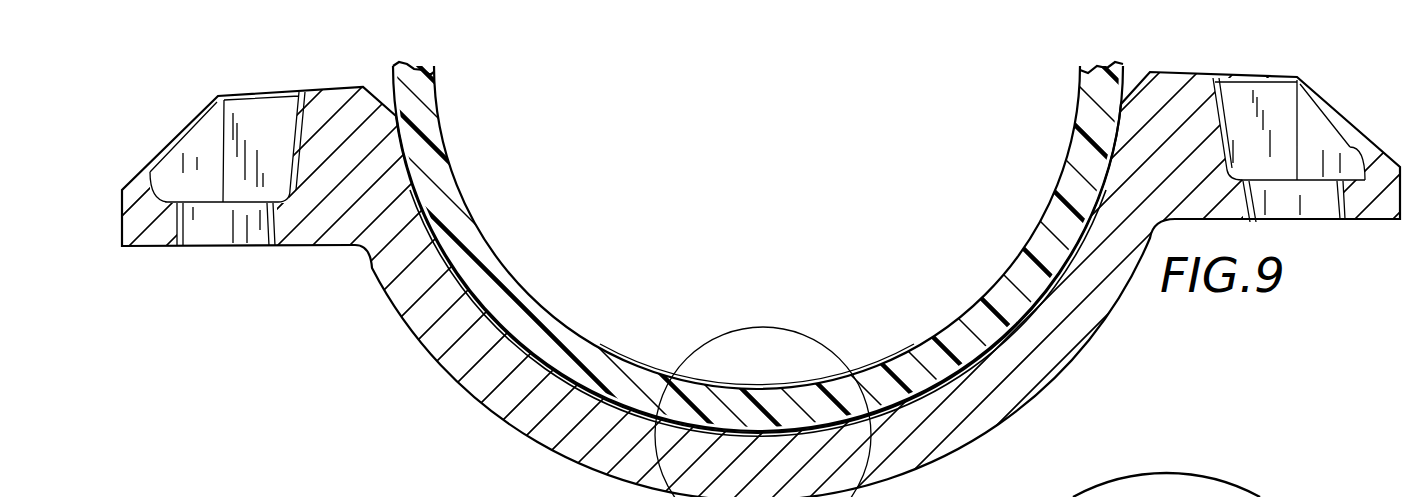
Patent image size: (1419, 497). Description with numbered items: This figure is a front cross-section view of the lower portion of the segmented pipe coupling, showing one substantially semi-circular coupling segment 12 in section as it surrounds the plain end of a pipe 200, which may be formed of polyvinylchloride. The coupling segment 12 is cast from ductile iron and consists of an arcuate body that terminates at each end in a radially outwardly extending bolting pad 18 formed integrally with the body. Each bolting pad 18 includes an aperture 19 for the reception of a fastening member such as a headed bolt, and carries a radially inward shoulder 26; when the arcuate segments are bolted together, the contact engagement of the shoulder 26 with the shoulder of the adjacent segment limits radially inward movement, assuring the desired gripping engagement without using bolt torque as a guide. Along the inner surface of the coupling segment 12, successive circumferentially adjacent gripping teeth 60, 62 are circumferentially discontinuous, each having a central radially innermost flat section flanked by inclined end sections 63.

The coupling segment 12 is at (1097, 297).
The bolting pad 18 is at (250, 105).
The aperture 19 is at (1279, 101).
The radially inward shoulder 26 is at (316, 86).
The pipe 200 is at (462, 197).
The gripping tooth 60 is at (708, 432).
The gripping tooth 62 is at (795, 430).
The inclined end section 63 is at (747, 390).